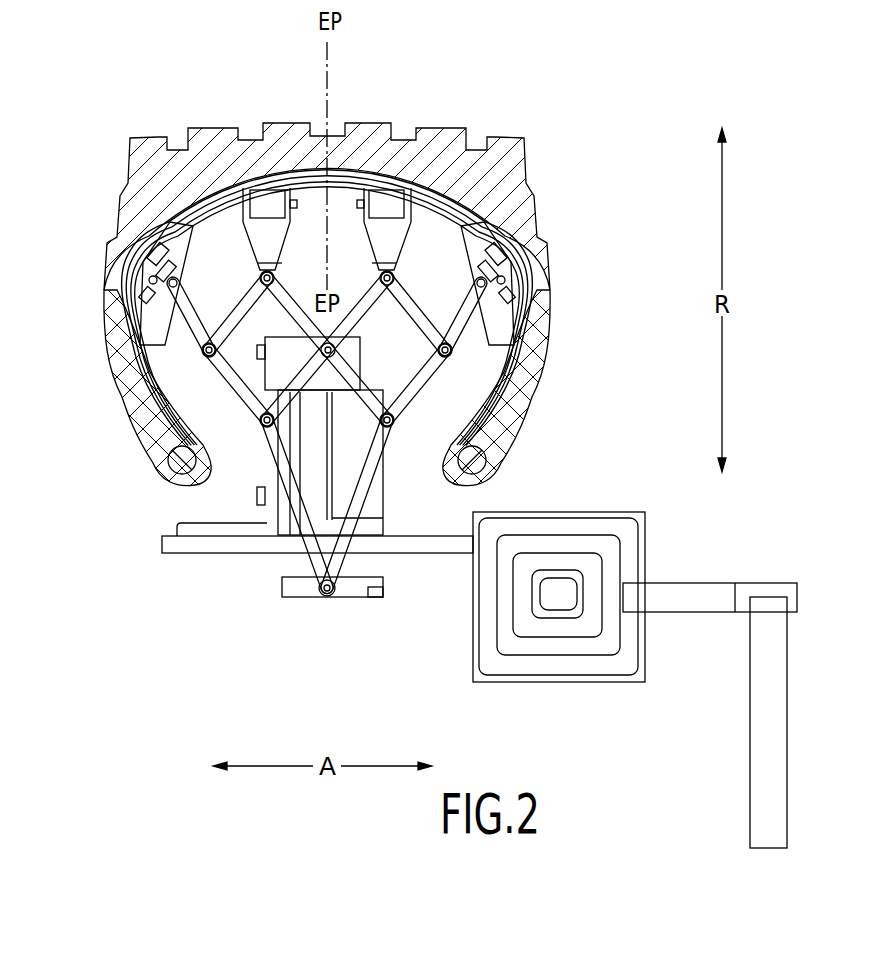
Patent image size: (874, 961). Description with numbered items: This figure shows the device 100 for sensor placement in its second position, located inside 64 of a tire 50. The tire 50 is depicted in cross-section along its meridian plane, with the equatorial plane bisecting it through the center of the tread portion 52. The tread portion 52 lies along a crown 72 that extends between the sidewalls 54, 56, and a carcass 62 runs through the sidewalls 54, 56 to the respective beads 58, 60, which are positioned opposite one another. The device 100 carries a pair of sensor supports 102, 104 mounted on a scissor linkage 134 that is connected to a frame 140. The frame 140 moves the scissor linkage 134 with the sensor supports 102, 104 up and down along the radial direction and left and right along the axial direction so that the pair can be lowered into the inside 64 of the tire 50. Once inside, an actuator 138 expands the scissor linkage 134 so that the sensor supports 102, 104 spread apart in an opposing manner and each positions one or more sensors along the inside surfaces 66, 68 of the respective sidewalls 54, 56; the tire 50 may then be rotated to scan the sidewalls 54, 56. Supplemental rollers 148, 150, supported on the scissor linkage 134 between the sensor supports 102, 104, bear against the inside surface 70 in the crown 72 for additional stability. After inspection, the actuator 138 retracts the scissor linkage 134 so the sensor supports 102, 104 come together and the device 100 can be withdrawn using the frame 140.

The tire 50 is at (330, 285).
The tread portion 52 is at (500, 140).
The sidewall 54 is at (84, 298).
The sidewall 56 is at (570, 298).
The bead 58 is at (178, 466).
The bead 60 is at (468, 462).
The carcass 62 is at (148, 395).
The inside of tire 64 is at (452, 278).
The inside surface 66 is at (178, 286).
The inside surface 68 is at (492, 278).
The inside surface 70 is at (362, 180).
The crown 72 is at (163, 169).
The device 100 is at (166, 660).
The sensor support 102 is at (200, 262).
The sensor support 104 is at (445, 259).
The scissor linkage 134 is at (434, 393).
The actuator 138 is at (310, 483).
The frame 140 is at (725, 592).
The supplemental roller 148 is at (268, 197).
The supplemental roller 150 is at (393, 193).